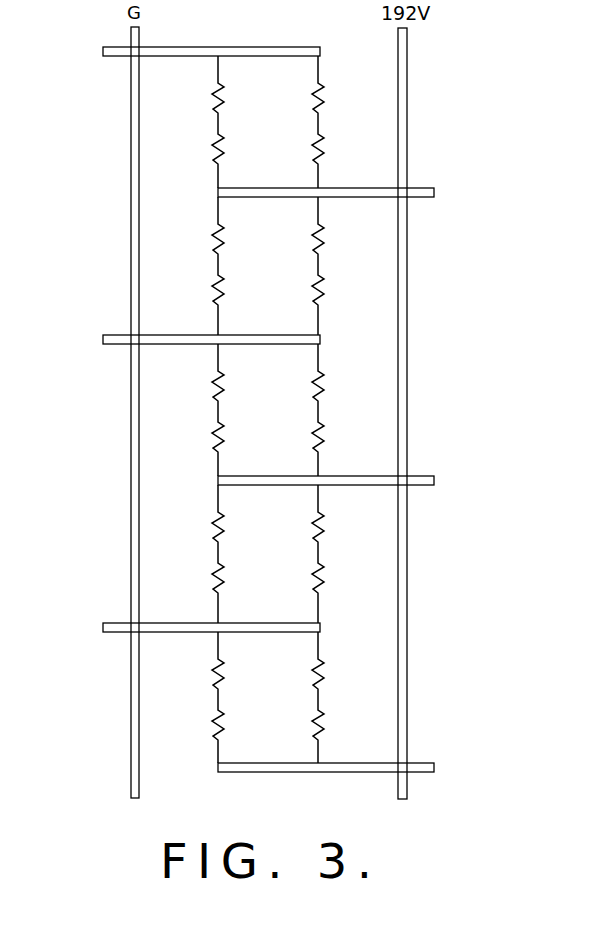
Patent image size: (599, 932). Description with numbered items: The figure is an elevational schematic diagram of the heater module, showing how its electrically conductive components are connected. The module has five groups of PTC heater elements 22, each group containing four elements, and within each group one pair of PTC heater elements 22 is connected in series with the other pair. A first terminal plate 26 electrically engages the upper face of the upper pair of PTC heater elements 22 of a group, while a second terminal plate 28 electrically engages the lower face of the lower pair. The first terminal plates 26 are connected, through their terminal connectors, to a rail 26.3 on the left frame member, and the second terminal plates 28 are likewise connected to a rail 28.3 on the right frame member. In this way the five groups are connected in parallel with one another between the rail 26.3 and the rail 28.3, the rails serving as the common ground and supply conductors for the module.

The PTC heater elements 22 is at (314, 152).
The first terminal plate 26 is at (253, 47).
The rail 26.3 is at (131, 197).
The second terminal plate 28 is at (363, 188).
The rail 28.3 is at (407, 348).